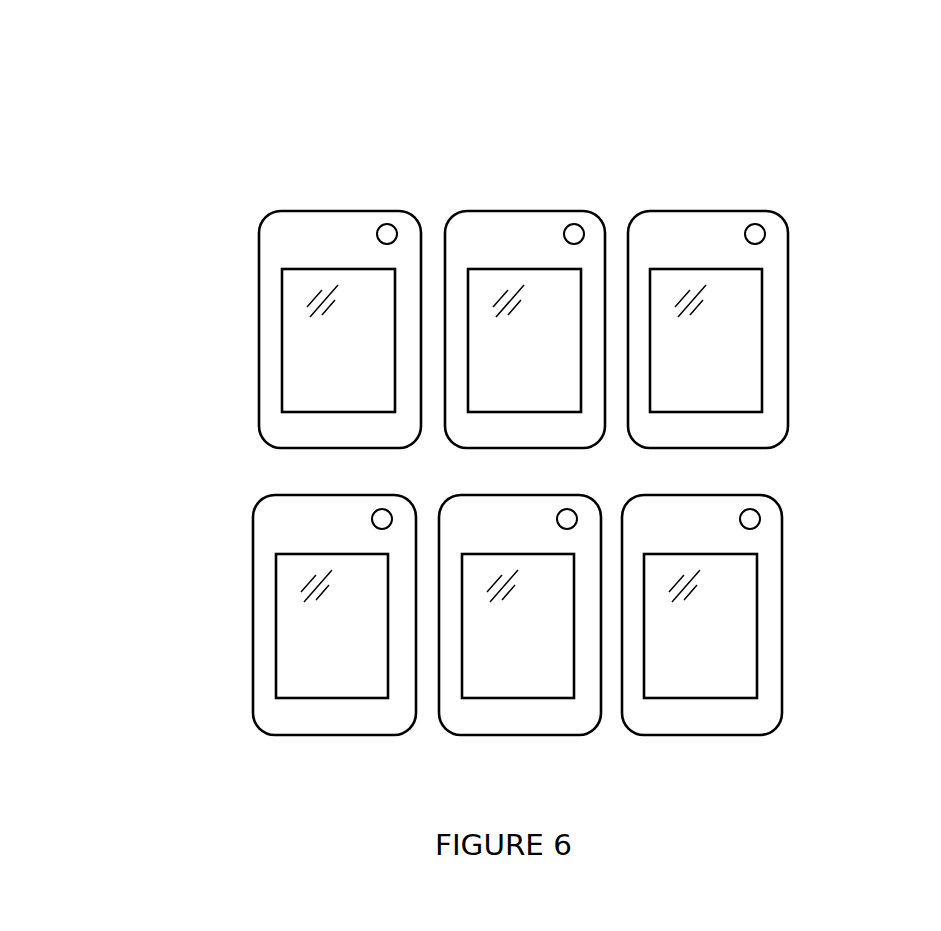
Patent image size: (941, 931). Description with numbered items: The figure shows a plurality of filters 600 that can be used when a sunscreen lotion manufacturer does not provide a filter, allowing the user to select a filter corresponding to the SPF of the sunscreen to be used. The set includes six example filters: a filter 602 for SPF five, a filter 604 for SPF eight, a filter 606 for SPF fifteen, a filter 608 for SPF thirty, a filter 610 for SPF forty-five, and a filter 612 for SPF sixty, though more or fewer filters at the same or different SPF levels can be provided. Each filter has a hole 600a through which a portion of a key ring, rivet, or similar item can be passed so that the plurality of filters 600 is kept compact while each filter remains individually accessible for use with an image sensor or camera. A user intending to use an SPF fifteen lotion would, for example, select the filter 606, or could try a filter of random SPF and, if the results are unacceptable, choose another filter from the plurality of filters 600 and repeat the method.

The plurality of filters 600 is at (747, 135).
The hole 600a is at (765, 233).
The filter 602 is at (310, 211).
The filter 604 is at (488, 215).
The filter 606 is at (781, 305).
The filter 608 is at (252, 590).
The filter 610 is at (467, 733).
The filter 612 is at (782, 562).